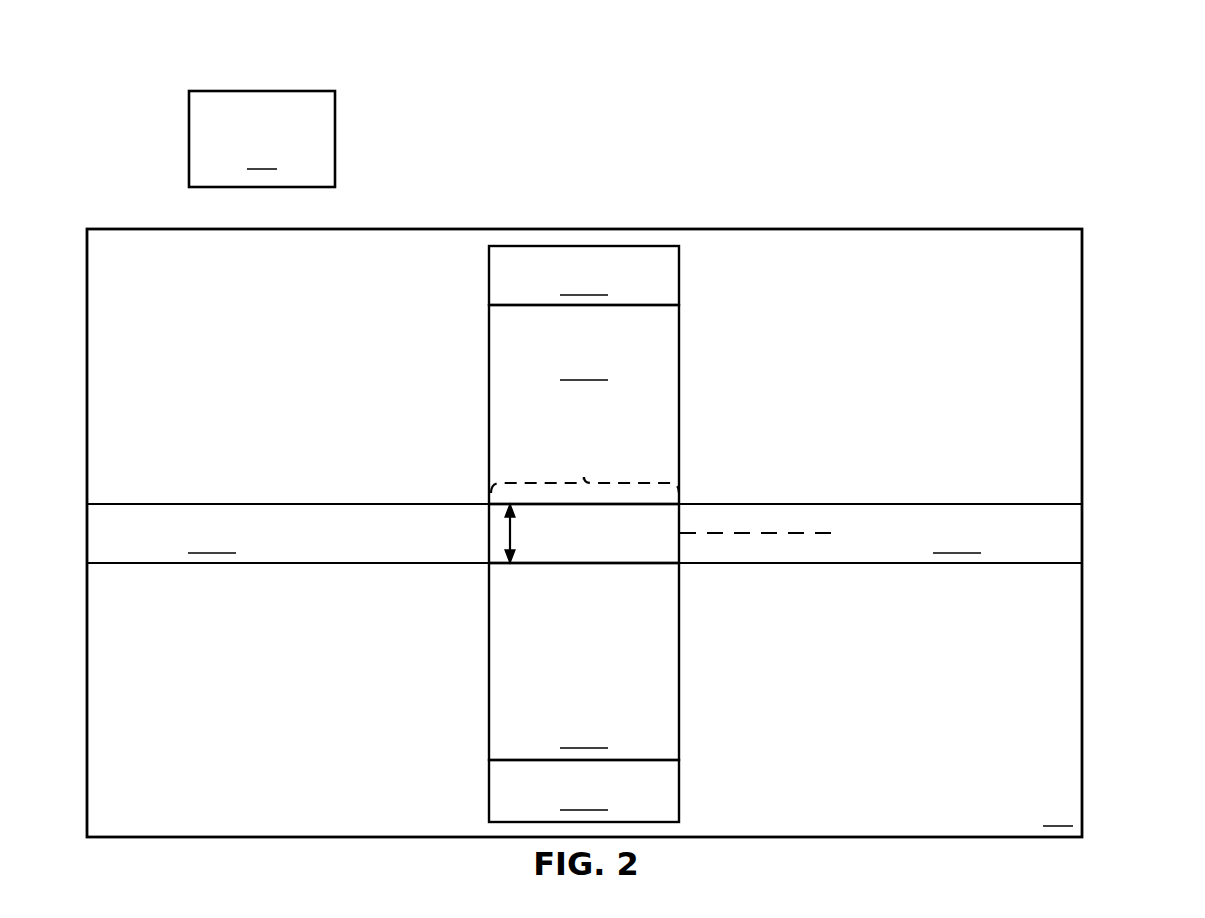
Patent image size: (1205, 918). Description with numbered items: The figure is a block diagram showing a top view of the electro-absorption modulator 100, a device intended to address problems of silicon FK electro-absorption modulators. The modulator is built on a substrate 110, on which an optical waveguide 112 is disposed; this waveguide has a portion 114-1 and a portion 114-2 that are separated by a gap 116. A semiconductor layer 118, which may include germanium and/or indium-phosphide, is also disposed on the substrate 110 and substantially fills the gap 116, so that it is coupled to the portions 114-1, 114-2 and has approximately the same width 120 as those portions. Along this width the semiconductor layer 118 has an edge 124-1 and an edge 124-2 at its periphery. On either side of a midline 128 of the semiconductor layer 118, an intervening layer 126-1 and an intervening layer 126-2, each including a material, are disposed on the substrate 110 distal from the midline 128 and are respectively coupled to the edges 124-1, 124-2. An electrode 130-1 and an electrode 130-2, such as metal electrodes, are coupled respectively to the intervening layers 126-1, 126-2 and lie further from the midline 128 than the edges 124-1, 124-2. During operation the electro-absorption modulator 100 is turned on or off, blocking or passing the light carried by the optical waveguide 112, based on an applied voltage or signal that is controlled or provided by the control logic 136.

The electro-absorption modulator 100 is at (634, 449).
The substrate 110 is at (584, 533).
The optical waveguide 112 is at (584, 596).
The portion 114-1 is at (288, 533).
The portion 114-2 is at (880, 533).
The gap 116 is at (585, 463).
The semiconductor layer 118 is at (694, 595).
The width 120 is at (421, 506).
The edge 124-1 is at (545, 455).
The edge 124-2 is at (545, 635).
The intervening layer 126-1 is at (584, 404).
The intervening layer 126-2 is at (584, 661).
The midline 128 is at (772, 476).
The electrode 130-1 is at (584, 275).
The electrode 130-2 is at (584, 791).
The control logic 136 is at (262, 139).